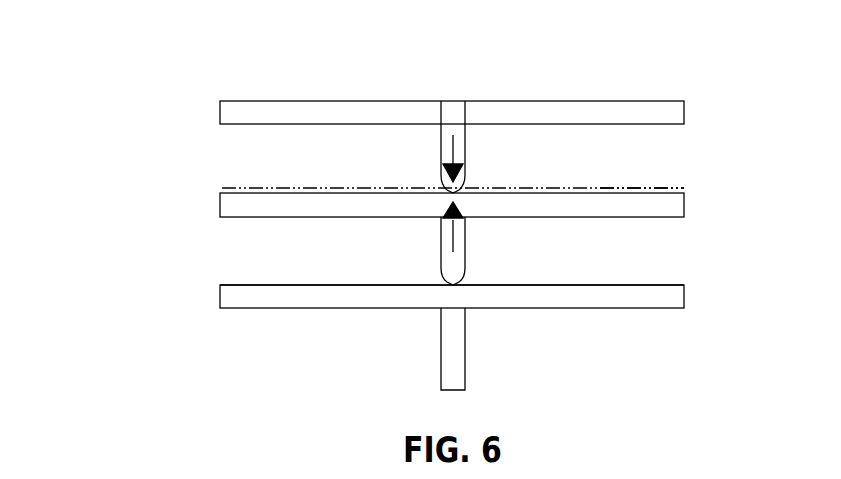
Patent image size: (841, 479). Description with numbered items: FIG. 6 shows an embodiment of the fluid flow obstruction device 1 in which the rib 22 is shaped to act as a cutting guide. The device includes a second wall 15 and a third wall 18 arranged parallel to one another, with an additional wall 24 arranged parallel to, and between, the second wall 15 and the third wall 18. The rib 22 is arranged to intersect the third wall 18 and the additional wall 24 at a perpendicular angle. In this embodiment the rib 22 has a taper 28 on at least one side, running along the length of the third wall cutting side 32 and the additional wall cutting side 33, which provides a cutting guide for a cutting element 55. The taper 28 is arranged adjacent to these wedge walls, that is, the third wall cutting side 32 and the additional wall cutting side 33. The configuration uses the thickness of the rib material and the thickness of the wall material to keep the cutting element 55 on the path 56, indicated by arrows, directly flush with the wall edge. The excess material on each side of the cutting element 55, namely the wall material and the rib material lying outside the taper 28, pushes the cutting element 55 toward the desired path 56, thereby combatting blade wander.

The fluid flow obstruction device 1 is at (68, 67).
The second wall 15 is at (684, 112).
The third wall 18 is at (684, 298).
The rib 22 is at (453, 150).
The additional wall 24 is at (684, 208).
The taper 28 is at (463, 275).
The third wall cutting side 32 is at (240, 285).
The additional wall cutting side 33 is at (238, 191).
The cutting element 55 is at (684, 188).
The path 56 is at (453, 150).